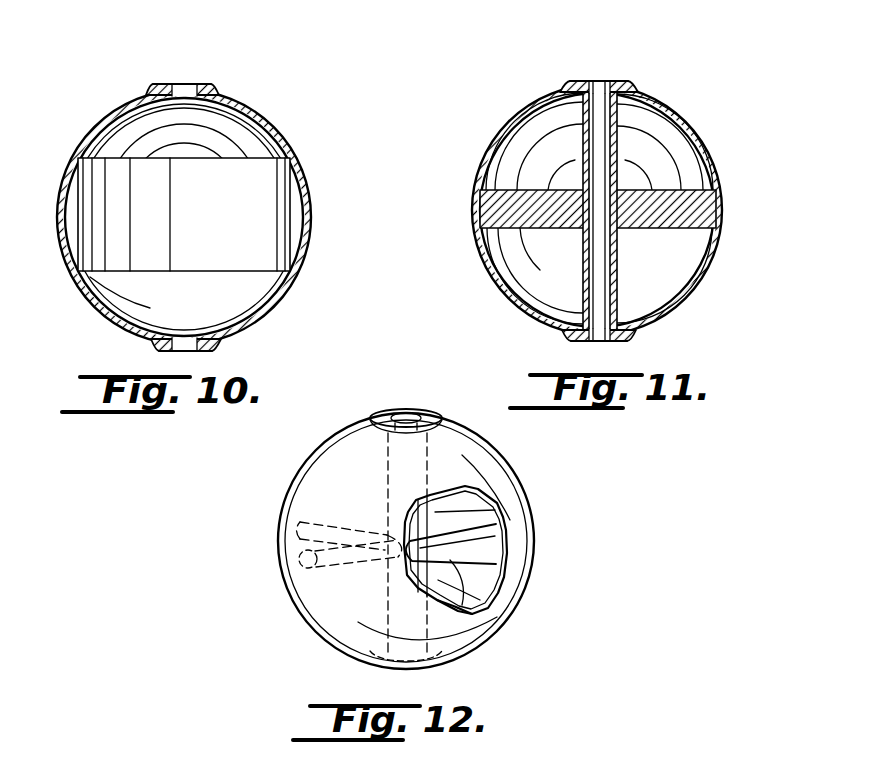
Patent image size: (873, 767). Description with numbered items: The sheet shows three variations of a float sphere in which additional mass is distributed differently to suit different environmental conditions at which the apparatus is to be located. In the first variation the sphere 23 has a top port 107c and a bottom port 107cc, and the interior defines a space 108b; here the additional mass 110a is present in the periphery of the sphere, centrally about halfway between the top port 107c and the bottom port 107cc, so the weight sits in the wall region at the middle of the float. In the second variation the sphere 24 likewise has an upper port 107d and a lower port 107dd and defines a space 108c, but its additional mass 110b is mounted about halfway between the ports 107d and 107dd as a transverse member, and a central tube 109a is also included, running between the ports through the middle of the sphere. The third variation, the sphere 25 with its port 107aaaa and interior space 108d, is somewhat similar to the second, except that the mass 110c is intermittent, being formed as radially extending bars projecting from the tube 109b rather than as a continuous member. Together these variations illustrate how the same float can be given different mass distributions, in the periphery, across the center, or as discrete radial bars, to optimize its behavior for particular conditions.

In FIG. 10, the sphere 23 is at (233, 100).
In FIG. 10, the top port 107c is at (187, 82).
In FIG. 10, the bottom port 107cc is at (187, 349).
In FIG. 10, the space 108b is at (248, 150).
In FIG. 10, the additional mass 110a is at (302, 195).
In FIG. 11, the sphere 24 is at (663, 100).
In FIG. 11, the port 107d is at (602, 80).
In FIG. 11, the port 107dd is at (607, 340).
In FIG. 11, the space 108c is at (658, 155).
In FIG. 11, the central tube 109a is at (620, 140).
In FIG. 11, the additional mass 110b is at (703, 188).
In FIG. 12, the sphere 25 is at (462, 457).
In FIG. 12, the port 107aaaa is at (407, 420).
In FIG. 12, the space 108d is at (458, 510).
In FIG. 12, the mass 110c is at (485, 553).
In FIG. 12, the tube 109b is at (420, 578).